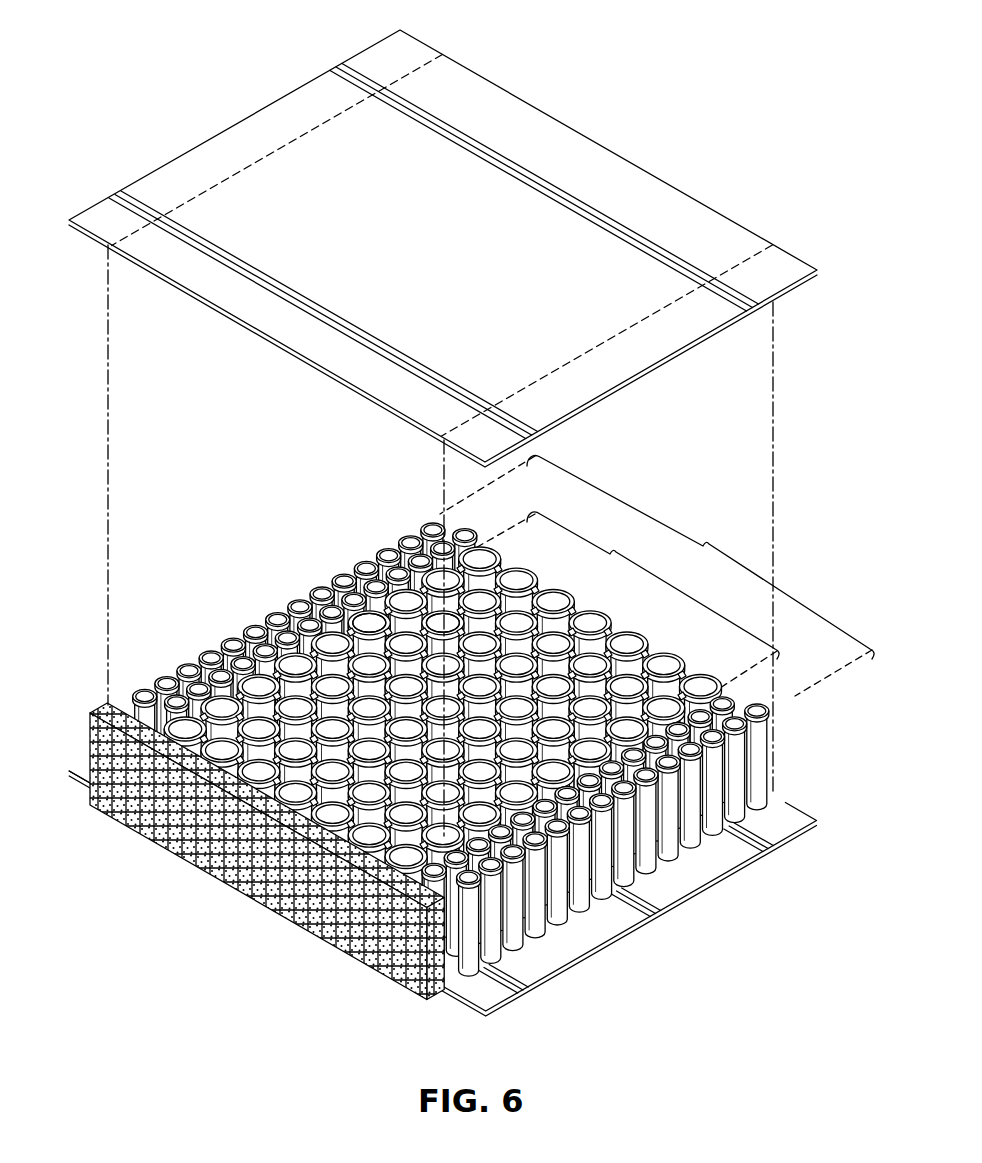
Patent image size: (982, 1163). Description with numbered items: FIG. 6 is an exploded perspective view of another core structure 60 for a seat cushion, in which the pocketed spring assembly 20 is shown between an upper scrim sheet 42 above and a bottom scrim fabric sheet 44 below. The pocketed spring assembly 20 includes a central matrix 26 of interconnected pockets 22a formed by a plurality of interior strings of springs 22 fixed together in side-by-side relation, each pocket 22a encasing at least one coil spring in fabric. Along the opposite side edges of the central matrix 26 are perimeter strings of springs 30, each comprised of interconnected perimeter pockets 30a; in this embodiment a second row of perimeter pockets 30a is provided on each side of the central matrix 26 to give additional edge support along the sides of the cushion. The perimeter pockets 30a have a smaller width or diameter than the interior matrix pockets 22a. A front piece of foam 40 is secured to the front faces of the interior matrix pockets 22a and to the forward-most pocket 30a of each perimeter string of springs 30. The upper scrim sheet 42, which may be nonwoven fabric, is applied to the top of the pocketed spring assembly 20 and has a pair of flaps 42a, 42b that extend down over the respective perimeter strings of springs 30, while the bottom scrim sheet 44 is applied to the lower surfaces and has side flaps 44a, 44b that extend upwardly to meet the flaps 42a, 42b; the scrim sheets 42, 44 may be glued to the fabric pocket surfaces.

The core structure 60 is at (469, 516).
The upper scrim sheet 42 is at (457, 241).
The flap 42a is at (405, 52).
The flap 42b is at (762, 268).
The bottom scrim fabric sheet 44 is at (458, 845).
The side flap 44a is at (82, 762).
The side flap 44b is at (788, 766).
The pocketed spring assembly 20 is at (503, 716).
The central matrix 26 is at (625, 600).
The interior string of springs 22 is at (507, 553).
The pocket 22a is at (437, 618).
The perimeter string of springs 30 is at (483, 727).
The perimeter pocket 30a is at (671, 838).
The front piece of foam 40 is at (328, 933).